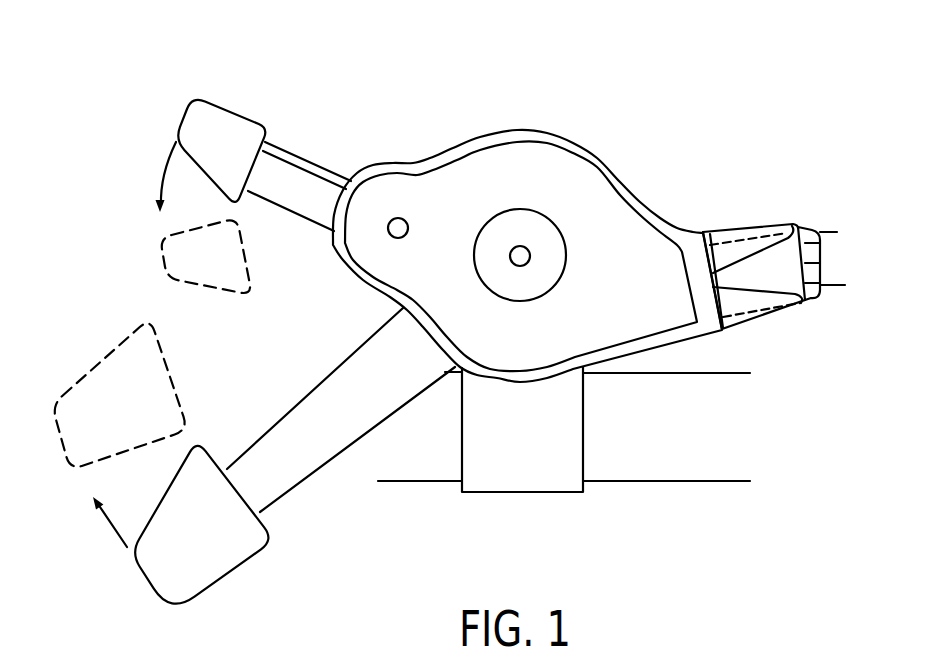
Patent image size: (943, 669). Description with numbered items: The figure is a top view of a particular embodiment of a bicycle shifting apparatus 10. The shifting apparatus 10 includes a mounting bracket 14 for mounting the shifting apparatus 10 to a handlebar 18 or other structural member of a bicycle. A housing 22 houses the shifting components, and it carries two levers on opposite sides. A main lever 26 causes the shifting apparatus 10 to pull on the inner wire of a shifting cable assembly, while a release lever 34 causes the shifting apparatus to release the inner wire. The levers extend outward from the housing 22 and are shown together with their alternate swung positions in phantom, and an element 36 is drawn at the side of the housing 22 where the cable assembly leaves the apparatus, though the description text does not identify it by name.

The bicycle shifting apparatus 10 is at (417, 93).
The mounting bracket 14 is at (517, 462).
The handlebar 18 is at (668, 440).
The housing 22 is at (597, 162).
The main lever 26 is at (317, 450).
The release lever 34 is at (300, 152).
The pivot connector 36 is at (780, 212).